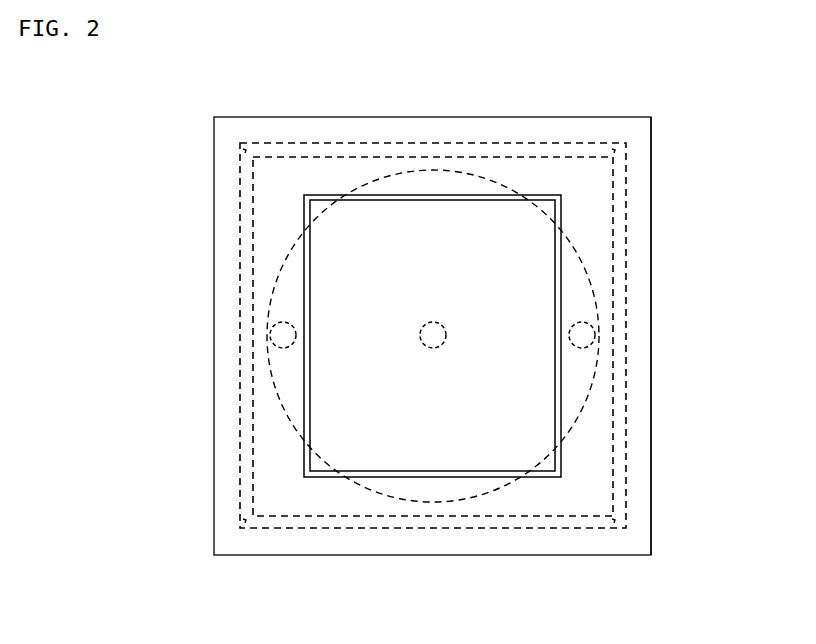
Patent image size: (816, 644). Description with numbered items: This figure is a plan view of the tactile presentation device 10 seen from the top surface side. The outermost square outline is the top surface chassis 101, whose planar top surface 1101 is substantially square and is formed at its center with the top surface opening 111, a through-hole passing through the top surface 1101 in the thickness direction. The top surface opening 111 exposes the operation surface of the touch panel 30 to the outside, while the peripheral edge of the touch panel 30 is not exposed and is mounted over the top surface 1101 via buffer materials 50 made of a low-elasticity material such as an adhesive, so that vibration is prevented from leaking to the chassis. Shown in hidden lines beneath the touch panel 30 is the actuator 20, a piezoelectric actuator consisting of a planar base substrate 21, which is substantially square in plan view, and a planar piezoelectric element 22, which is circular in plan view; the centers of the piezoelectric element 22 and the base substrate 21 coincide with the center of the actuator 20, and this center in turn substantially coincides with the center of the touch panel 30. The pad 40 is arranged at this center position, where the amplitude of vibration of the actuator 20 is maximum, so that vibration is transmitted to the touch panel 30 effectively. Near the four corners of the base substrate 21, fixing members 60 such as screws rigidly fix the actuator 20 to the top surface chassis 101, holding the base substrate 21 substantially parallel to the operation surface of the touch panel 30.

The tactile presentation device 10 is at (698, 64).
The top surface chassis 101 is at (714, 149).
The top surface 1101 is at (652, 183).
The actuator 20 is at (713, 266).
The base substrate 21 is at (628, 265).
The piezoelectric element 22 is at (597, 302).
The touch panel 30 is at (433, 247).
The top surface opening 111 is at (496, 187).
The pad 40 is at (434, 349).
The buffer materials 50 is at (270, 332).
The fixing members 60 is at (250, 137).